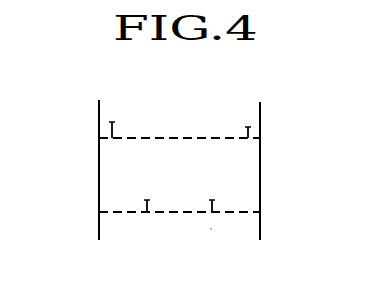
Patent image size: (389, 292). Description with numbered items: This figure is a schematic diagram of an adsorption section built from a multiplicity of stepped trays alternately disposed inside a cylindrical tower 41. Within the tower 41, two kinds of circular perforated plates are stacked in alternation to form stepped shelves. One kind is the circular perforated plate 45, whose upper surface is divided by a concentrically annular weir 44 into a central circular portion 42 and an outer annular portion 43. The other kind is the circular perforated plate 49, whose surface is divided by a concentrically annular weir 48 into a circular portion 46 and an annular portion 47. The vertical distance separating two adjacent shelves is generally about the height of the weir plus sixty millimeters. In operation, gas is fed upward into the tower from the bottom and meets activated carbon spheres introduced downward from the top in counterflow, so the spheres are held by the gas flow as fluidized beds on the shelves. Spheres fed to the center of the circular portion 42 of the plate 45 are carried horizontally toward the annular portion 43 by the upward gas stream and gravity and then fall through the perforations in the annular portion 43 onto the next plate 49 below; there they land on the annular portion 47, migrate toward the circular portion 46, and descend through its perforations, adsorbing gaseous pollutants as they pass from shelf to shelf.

The cylindrical tower 41 is at (99, 172).
The circular portion 42 is at (183, 138).
The annular portion 43 is at (102, 138).
The concentrically annular weir 44 is at (248, 127).
The circular perforated plate 45 is at (225, 150).
The circular portion 46 is at (182, 212).
The annular portion 47 is at (126, 213).
The concentrically annular weir 48 is at (212, 204).
The circular perforated plate 49 is at (210, 228).